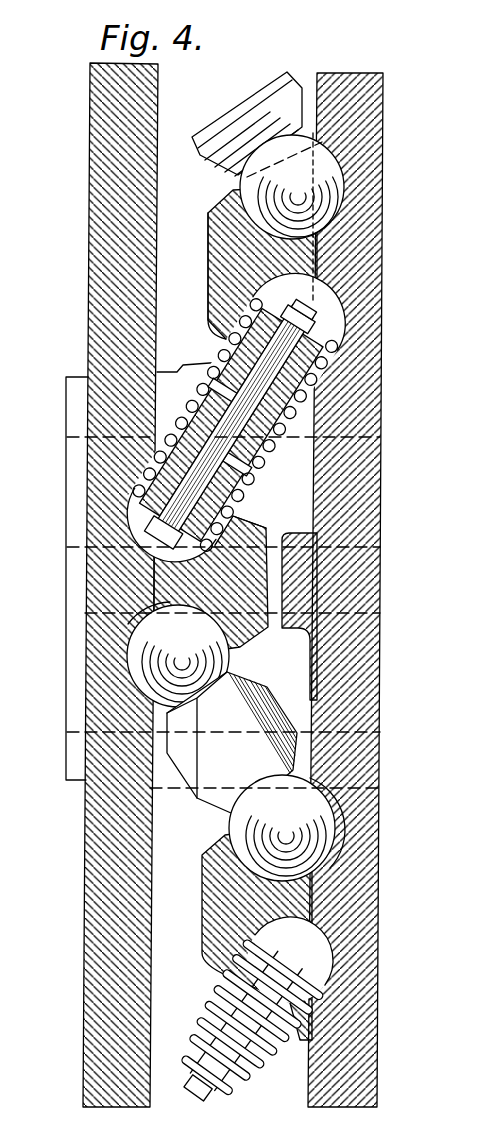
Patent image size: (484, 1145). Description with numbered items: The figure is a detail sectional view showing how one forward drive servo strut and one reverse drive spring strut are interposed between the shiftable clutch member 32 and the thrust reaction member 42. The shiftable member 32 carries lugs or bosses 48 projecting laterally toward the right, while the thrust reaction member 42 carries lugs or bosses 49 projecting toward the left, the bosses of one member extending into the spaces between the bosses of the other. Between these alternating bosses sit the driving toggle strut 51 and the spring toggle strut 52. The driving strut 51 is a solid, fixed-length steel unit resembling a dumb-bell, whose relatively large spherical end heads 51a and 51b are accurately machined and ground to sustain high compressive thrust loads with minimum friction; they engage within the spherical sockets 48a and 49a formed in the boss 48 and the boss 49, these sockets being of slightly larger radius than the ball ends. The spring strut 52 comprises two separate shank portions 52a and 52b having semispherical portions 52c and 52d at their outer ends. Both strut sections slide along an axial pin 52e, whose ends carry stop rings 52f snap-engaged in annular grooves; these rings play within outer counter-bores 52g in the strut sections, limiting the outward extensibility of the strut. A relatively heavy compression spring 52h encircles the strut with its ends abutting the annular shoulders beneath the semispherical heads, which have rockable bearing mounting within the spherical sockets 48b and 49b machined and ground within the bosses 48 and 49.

The shiftable clutch member 32 is at (88, 206).
The thrust reaction member 42 is at (388, 213).
The lug or boss 48 is at (270, 577).
The spherical socket 48a is at (147, 627).
The spherical socket 48b is at (148, 495).
The lug or boss 49 is at (205, 276).
The spherical socket 49a is at (325, 865).
The spherical socket 49b is at (342, 336).
The driving toggle strut 51 is at (203, 767).
The spherical end head 51a is at (147, 660).
The spherical end head 51b is at (290, 830).
The spring toggle strut 52 is at (242, 620).
The shank portion 52a is at (235, 465).
The shank portion 52b is at (300, 396).
The semispherical portion 52c is at (150, 528).
The semispherical portion 52d is at (335, 320).
The axial pin 52e is at (250, 405).
The stop ring 52f is at (330, 298).
The outer counter-bore 52g is at (352, 265).
The compression spring 52h is at (235, 462).